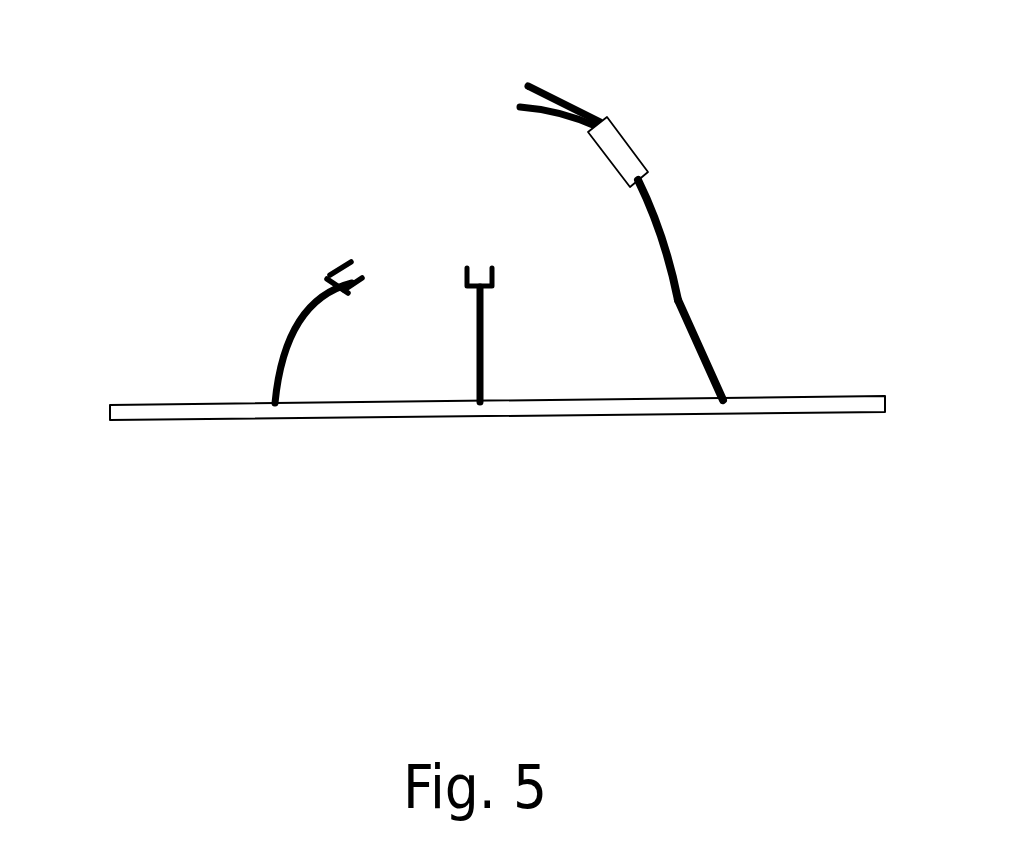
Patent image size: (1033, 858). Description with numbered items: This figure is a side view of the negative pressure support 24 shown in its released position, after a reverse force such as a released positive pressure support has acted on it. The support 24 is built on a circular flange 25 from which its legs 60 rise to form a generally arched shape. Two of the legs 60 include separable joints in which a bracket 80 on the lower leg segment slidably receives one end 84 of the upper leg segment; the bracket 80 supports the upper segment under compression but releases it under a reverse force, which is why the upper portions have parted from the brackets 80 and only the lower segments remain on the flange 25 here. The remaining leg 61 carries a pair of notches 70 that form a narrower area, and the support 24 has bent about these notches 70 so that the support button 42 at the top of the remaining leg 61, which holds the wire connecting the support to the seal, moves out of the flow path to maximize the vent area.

The negative pressure support 24 is at (238, 166).
The circular flange 25 is at (142, 410).
The support button 42 is at (620, 147).
The legs 60 is at (290, 334).
The remaining leg 61 is at (672, 250).
The notches 70 is at (683, 308).
The bracket 80 is at (340, 262).
The end of the upper leg segment 84 is at (531, 85).